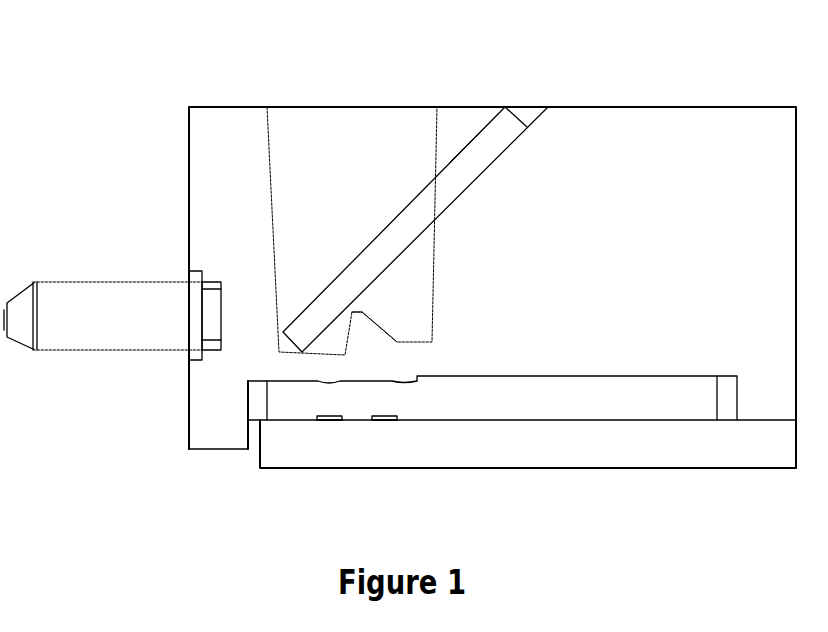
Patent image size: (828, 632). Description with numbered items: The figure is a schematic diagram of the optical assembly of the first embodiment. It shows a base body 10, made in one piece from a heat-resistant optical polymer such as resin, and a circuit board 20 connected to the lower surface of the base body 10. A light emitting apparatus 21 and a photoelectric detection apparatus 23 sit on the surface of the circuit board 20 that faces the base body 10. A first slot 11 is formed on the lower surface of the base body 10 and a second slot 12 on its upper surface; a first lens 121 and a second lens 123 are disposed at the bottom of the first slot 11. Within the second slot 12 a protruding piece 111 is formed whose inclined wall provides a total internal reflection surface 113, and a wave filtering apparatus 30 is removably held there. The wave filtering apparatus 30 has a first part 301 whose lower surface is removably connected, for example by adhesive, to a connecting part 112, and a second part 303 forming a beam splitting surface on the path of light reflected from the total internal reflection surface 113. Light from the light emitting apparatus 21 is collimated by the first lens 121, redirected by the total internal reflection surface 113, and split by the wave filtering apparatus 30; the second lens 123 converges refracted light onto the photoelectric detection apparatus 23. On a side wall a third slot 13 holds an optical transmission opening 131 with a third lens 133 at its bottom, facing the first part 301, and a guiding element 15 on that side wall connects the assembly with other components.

The base body 10 is at (638, 147).
The first slot 11 is at (672, 415).
The protruding piece 111 is at (372, 332).
The connecting part 112 is at (503, 153).
The total internal reflection surface 113 is at (362, 312).
The second slot 12 is at (318, 115).
The first lens 121 is at (392, 381).
The second lens 123 is at (320, 381).
The third slot 13 is at (207, 300).
The optical transmission opening 131 is at (215, 320).
The third lens 133 is at (218, 305).
The guiding element 15 is at (62, 343).
The circuit board 20 is at (733, 432).
The light emitting apparatus 21 is at (373, 420).
The photoelectric detection apparatus 23 is at (328, 420).
The wave filtering apparatus 30 is at (490, 120).
The first part 301 is at (450, 180).
The second part 303 is at (357, 277).